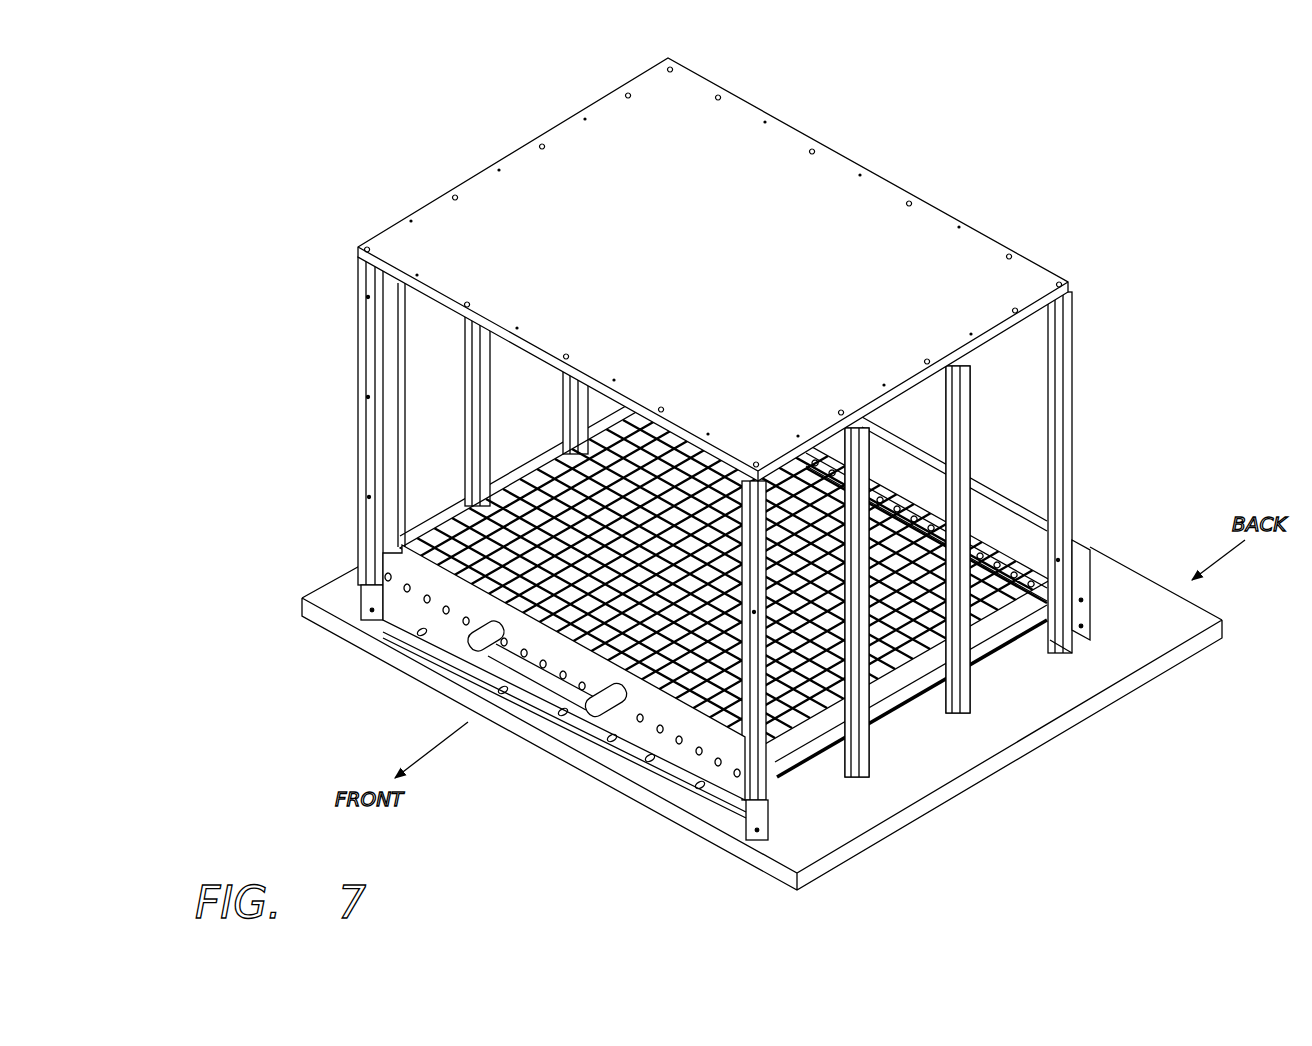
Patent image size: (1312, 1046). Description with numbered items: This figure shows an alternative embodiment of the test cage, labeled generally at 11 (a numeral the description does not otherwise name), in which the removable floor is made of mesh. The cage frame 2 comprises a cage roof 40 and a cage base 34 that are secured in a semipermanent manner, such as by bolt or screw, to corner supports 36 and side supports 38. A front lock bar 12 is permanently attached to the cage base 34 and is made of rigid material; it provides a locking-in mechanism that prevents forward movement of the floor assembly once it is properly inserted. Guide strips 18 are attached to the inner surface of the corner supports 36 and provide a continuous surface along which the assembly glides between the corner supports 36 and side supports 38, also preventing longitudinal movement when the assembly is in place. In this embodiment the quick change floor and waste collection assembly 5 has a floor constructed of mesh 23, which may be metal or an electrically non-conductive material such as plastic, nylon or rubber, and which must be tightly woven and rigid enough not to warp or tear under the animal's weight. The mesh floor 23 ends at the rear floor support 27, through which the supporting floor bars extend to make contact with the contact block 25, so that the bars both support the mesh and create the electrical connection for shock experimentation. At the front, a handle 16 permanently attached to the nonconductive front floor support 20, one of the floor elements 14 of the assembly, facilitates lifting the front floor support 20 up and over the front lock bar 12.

The cage frame 2 is at (322, 325).
The quick change floor and waste collection assembly 5 is at (268, 590).
The kennel assembly 11 is at (1055, 200).
The front lock bar 12 is at (683, 789).
The floor element 14 is at (640, 763).
The handle 16 is at (590, 712).
The guide strips 18 is at (358, 590).
The front floor support 20 is at (445, 623).
The mesh floor 23 is at (812, 737).
The contact block 25 is at (1080, 567).
The rear floor support 27 is at (1010, 557).
The cage base 34 is at (1102, 577).
The corner supports 36 is at (367, 410).
The side supports 38 is at (570, 436).
The cage roof 40 is at (713, 269).